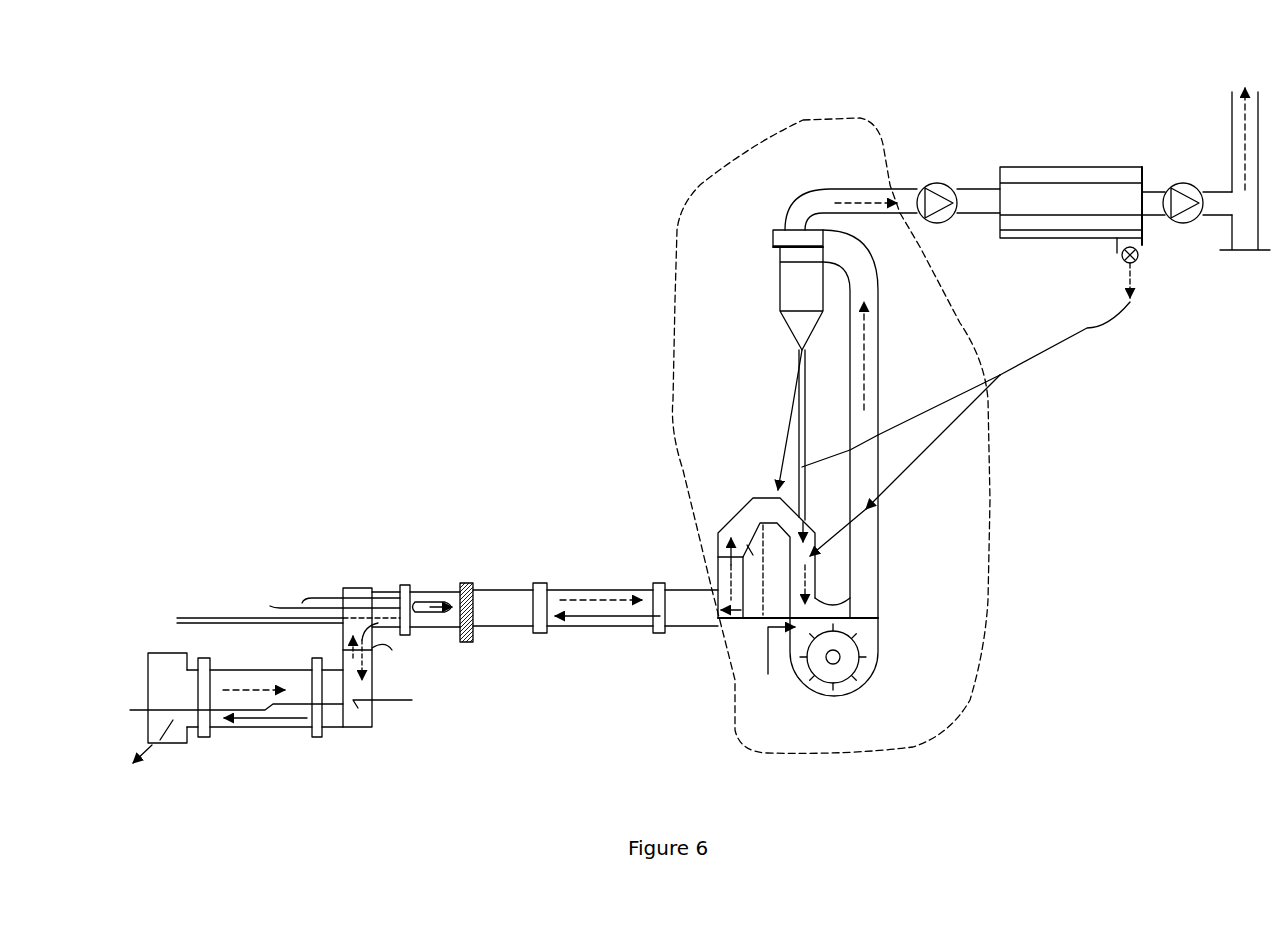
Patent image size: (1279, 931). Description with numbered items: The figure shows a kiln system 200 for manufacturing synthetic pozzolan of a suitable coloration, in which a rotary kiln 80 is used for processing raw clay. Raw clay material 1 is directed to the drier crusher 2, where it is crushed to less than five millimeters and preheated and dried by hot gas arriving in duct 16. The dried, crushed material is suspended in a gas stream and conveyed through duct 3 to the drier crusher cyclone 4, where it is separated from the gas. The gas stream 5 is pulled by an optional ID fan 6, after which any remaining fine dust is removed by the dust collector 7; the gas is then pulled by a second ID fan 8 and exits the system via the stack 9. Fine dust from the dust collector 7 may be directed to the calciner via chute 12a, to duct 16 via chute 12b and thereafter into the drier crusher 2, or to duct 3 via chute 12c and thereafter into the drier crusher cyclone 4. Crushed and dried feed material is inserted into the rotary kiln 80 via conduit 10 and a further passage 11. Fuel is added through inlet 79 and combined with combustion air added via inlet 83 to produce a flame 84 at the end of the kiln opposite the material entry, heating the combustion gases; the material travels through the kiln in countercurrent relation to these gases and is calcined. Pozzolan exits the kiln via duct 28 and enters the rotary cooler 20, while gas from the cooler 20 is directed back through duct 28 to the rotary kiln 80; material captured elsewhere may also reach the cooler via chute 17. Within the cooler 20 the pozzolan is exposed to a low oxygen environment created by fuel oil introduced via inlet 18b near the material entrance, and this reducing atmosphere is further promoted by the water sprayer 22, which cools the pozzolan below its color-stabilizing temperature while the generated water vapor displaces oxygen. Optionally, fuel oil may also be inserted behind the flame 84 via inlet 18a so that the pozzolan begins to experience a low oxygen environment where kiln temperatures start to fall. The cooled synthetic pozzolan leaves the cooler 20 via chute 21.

The separation system 200 is at (831, 401).
The raw clay material 1 is at (771, 671).
The drier crusher 2 is at (878, 656).
The duct 3 is at (891, 424).
The drier crusher cyclone 4 is at (764, 288).
The gas stream 5 is at (851, 178).
The ID fan 6 is at (958, 164).
The dust collector 7 is at (1078, 192).
The ID fan 8 is at (1187, 246).
The stack 9 is at (1245, 140).
The conduit 10 is at (751, 420).
The feed tube 11 is at (757, 435).
The chute 12a is at (1018, 360).
The chute 12b is at (901, 421).
The chute 12c is at (905, 465).
The duct 16 is at (882, 582).
The chute 17 is at (394, 657).
The inlet 18a is at (258, 593).
The inlet 18b is at (412, 738).
The rotary cooler 20 is at (265, 724).
The chute 21 is at (182, 730).
The water sprayer 22 is at (203, 723).
The duct 28 is at (441, 670).
The inlet 79 is at (308, 563).
The rotary kiln 80 is at (583, 577).
The inlet 83 is at (287, 586).
The flame 84 is at (416, 573).